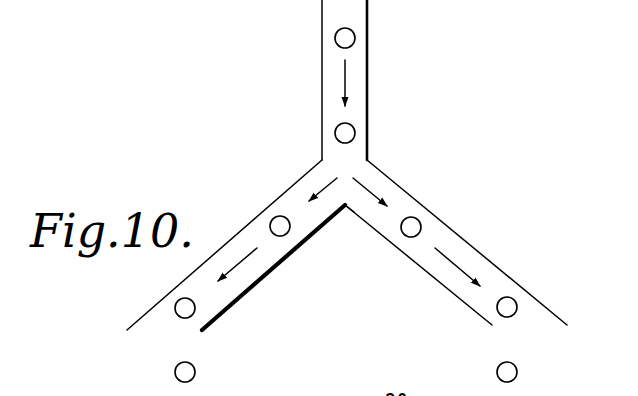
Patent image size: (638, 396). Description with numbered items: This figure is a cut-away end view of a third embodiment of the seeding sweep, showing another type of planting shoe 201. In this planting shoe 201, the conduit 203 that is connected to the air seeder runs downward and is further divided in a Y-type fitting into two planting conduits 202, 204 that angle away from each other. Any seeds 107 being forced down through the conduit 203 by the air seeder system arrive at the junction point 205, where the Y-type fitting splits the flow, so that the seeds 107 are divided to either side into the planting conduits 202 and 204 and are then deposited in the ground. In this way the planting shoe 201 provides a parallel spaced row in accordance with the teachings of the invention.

The seeds 107 is at (335, 38).
The planting shoe 201 is at (358, 165).
The planting conduit 202 is at (232, 238).
The conduit 203 is at (368, 78).
The planting conduit 204 is at (492, 262).
The junction point 205 is at (346, 208).